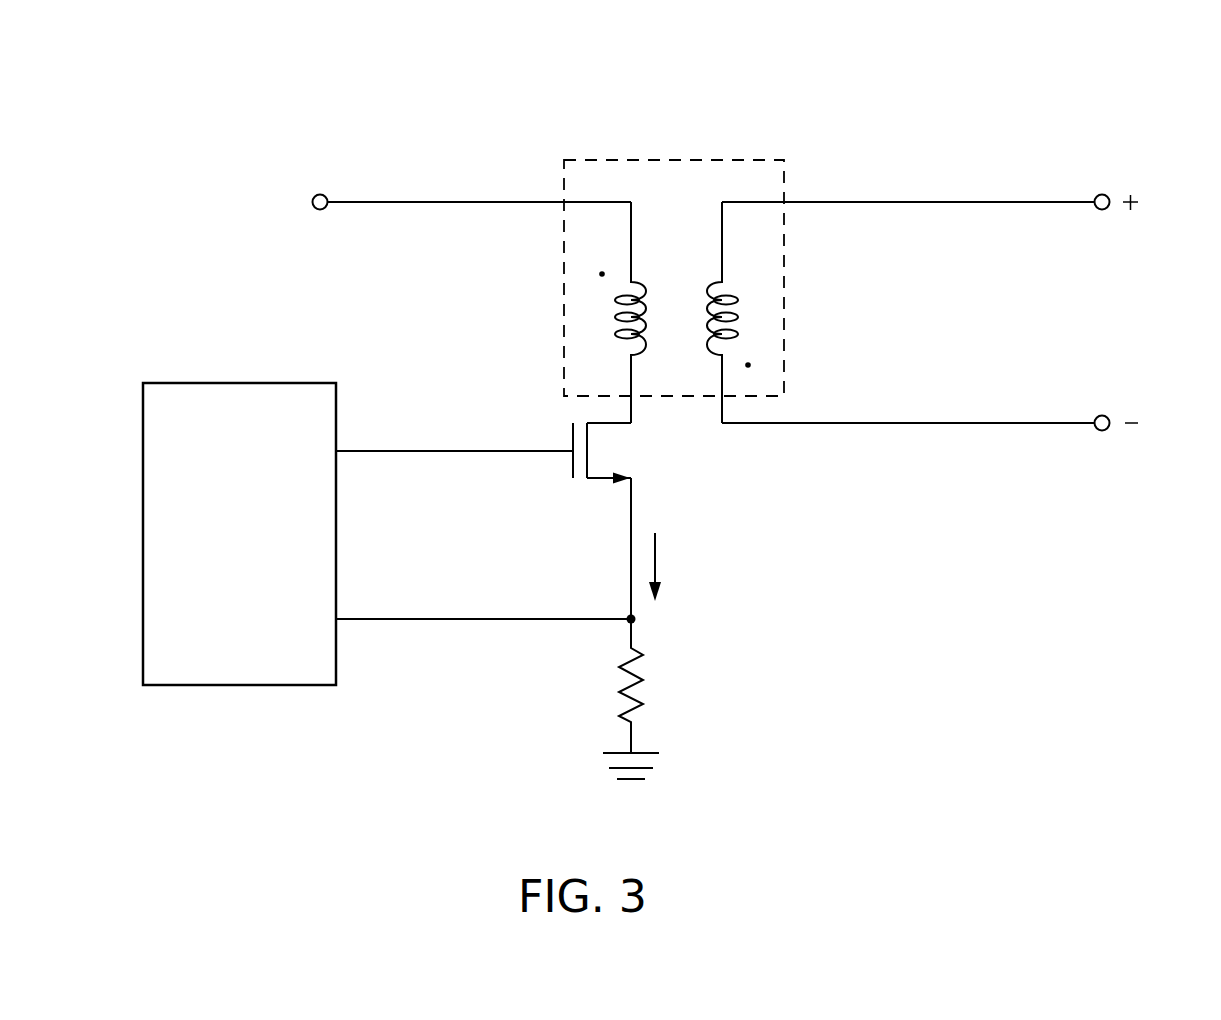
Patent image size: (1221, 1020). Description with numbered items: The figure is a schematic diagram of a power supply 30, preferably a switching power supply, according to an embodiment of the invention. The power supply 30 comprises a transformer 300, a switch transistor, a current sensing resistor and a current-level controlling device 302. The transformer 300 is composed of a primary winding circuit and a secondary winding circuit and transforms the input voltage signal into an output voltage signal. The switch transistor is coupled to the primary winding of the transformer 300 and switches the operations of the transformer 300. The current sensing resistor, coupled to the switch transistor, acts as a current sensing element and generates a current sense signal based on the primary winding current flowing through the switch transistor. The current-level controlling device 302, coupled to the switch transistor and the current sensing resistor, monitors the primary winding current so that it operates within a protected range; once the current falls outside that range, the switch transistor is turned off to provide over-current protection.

The power supply 30 is at (649, 411).
The transformer 300 is at (740, 160).
The current-level controlling device 302 is at (170, 383).